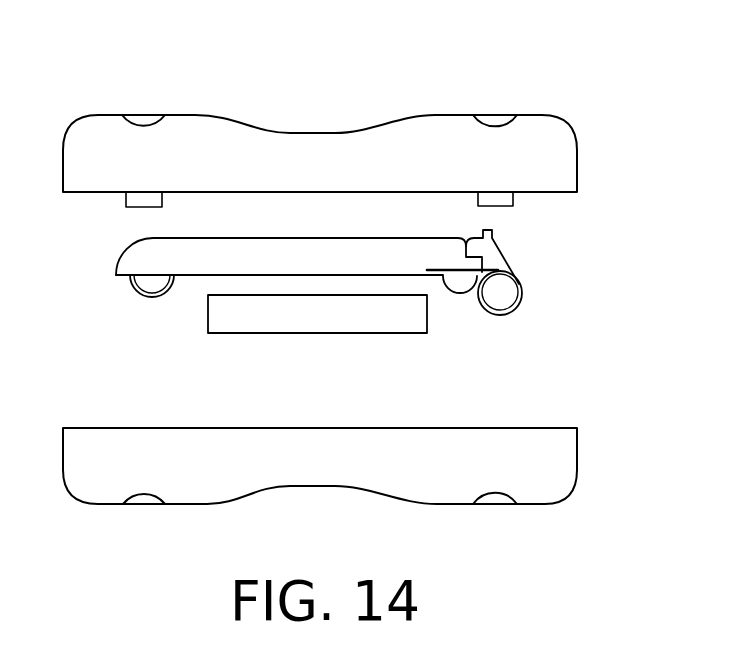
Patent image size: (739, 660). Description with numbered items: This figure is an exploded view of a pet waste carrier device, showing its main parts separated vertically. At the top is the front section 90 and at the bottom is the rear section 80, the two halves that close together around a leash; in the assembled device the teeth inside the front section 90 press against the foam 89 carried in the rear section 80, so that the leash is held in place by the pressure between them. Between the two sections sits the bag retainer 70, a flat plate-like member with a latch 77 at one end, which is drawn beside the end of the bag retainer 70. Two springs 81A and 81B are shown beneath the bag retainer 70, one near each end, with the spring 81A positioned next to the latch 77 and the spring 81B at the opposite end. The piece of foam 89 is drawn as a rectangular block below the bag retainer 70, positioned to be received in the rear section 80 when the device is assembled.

The front section 90 is at (435, 137).
The rear section 80 is at (550, 455).
The bag retainer 70 is at (283, 255).
The latch 77 is at (494, 259).
The spring 81A is at (523, 297).
The spring 81B is at (148, 298).
The foam 89 is at (263, 334).